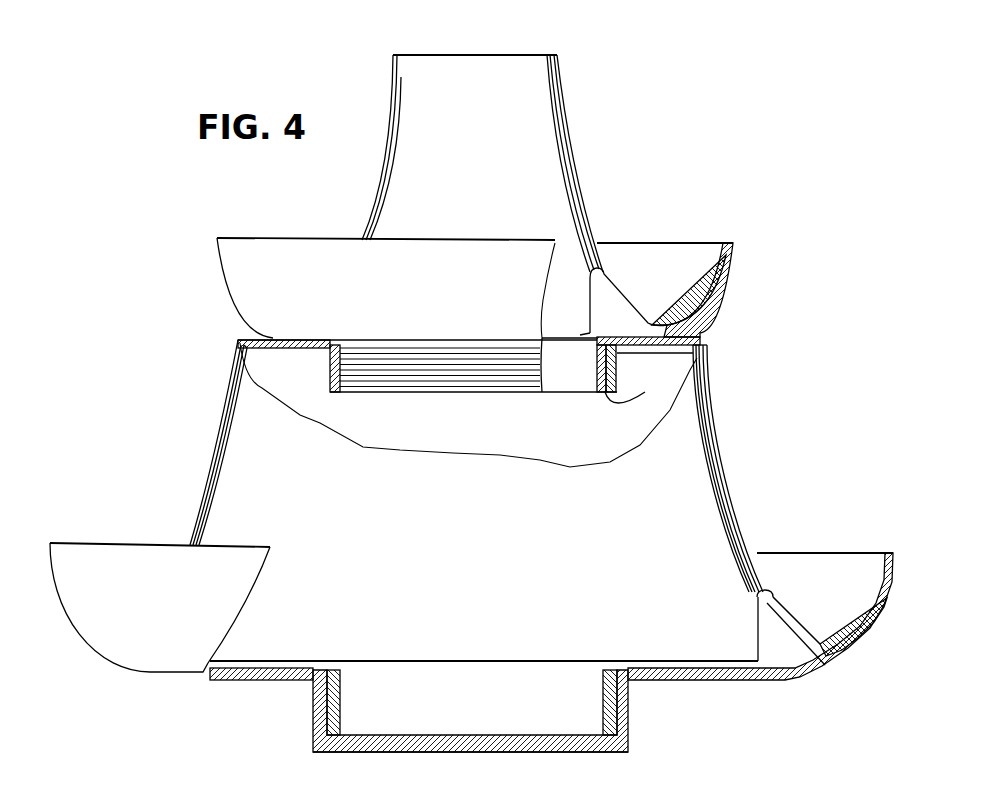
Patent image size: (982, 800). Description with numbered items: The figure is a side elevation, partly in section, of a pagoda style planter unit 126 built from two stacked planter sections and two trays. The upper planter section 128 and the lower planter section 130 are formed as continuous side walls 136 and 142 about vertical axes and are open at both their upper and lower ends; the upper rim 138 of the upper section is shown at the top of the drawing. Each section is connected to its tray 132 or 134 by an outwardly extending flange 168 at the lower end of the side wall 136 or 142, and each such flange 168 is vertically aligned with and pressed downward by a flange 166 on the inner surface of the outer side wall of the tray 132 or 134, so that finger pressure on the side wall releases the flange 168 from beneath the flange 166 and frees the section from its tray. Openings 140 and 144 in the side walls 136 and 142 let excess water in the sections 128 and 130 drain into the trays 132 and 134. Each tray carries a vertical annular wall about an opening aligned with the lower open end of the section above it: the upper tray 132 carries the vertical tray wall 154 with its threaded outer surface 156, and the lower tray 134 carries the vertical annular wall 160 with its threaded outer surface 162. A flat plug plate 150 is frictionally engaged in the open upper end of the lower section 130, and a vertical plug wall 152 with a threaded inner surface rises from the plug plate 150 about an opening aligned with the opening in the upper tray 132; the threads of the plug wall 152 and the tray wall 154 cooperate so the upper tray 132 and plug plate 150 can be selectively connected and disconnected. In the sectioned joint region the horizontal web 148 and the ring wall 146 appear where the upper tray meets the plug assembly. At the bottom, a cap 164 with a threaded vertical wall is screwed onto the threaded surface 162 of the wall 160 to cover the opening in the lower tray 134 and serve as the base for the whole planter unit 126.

The planter unit 126 is at (168, 240).
The upper planter section 128 is at (470, 98).
The lower planter section 130 is at (549, 443).
The upper tray 132 is at (287, 245).
The lower tray 134 is at (818, 577).
The side wall of upper planter section 136 is at (568, 165).
The upper rim 138 is at (507, 55).
The opening in upper side wall 140 is at (600, 290).
The side wall of lower planter section 142 is at (710, 421).
The opening in lower side wall 144 is at (780, 603).
The ring wall 146 is at (704, 345).
The horizontal web 148 is at (582, 335).
The plug plate 150 is at (603, 362).
The vertical plug wall 152 is at (612, 372).
The vertical tray wall 154 is at (456, 372).
The threaded outer surface 156 is at (612, 404).
The vertical annular wall of lower tray 160 is at (603, 693).
The threaded outer surface 162 is at (617, 710).
The cap 164 is at (630, 718).
The tray flange 166 is at (727, 268).
The side wall flange 168 is at (663, 326).